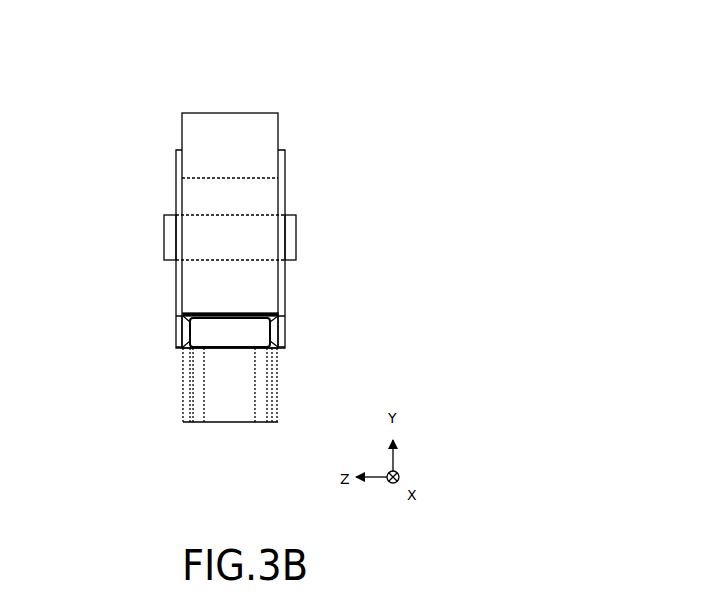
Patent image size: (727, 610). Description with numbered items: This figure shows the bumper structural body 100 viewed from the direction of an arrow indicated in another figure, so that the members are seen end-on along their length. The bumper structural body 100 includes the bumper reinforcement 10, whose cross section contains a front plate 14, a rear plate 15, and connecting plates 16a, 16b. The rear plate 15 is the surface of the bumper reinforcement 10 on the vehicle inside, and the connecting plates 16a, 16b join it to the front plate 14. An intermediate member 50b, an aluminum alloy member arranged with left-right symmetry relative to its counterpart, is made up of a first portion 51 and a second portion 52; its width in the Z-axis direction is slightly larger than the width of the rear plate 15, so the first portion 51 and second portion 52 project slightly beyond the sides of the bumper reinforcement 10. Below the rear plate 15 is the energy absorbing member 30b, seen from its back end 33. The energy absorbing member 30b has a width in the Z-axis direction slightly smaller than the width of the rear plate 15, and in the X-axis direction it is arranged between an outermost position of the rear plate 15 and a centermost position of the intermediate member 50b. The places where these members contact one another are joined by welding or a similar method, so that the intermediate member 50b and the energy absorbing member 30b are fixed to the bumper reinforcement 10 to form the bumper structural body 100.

The bumper structural body 100 is at (372, 90).
The bumper reinforcement 10 is at (146, 178).
The front plate 14 is at (222, 160).
The intermediate member 50b is at (332, 221).
The first portion 51 is at (165, 265).
The second portion 52 is at (296, 250).
The rear plate 15 is at (283, 336).
The connecting plate 16a is at (178, 333).
The connecting plate 16b is at (284, 326).
The energy absorbing member 30b is at (299, 401).
The back end 33 is at (232, 423).